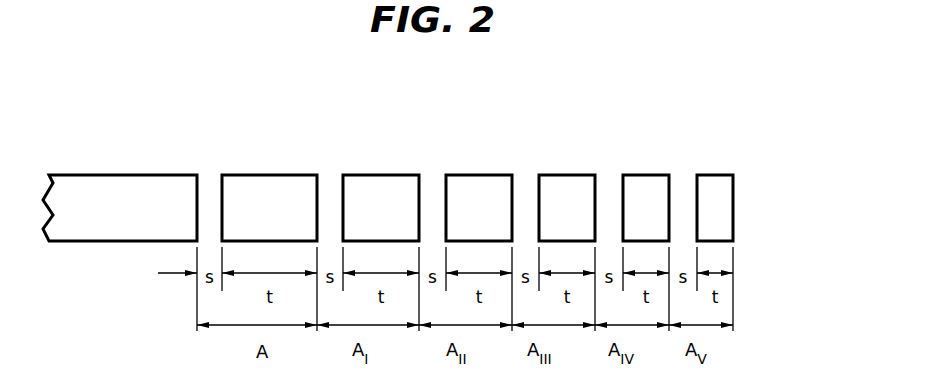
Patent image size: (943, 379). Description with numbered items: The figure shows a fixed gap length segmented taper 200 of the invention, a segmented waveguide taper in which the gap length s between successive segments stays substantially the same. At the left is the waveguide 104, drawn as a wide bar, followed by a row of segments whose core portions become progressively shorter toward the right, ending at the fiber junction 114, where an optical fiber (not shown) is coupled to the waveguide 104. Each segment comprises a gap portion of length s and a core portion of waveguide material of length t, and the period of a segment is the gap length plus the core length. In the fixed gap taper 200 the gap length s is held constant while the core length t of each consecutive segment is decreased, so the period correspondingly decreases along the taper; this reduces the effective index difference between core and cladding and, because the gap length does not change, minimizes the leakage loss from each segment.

The fixed gap length segmented taper 200 is at (243, 57).
The waveguide 104 is at (147, 165).
The fiber junction 114 is at (750, 185).